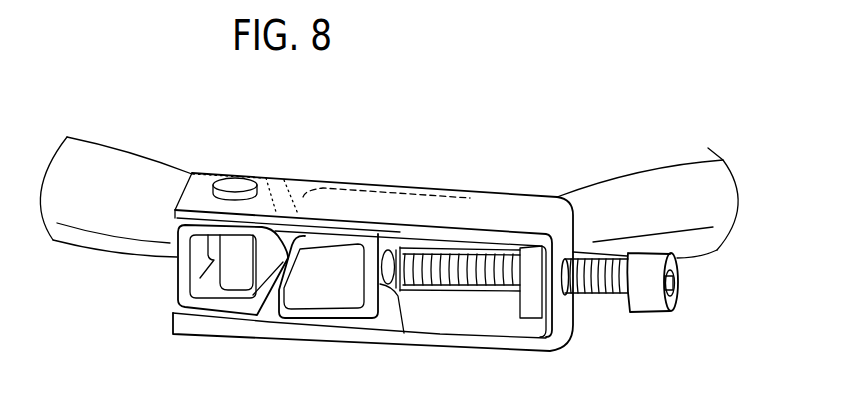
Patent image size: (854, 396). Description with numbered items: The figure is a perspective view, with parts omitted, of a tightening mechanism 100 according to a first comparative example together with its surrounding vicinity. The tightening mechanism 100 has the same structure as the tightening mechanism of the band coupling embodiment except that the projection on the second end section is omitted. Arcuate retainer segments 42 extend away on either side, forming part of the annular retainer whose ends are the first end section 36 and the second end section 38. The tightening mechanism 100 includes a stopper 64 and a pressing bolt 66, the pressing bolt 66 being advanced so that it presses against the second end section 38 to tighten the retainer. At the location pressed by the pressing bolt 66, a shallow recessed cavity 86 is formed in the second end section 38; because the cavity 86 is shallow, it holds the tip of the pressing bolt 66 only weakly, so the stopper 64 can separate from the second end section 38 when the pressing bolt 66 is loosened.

The tightening mechanism 100 is at (373, 168).
The retainer segment 42 is at (107, 183).
The first end section 36 is at (217, 307).
The second end section 38 is at (313, 313).
The cavity 86 is at (397, 293).
The stopper 64 is at (512, 203).
The pressing bolt 66 is at (602, 298).